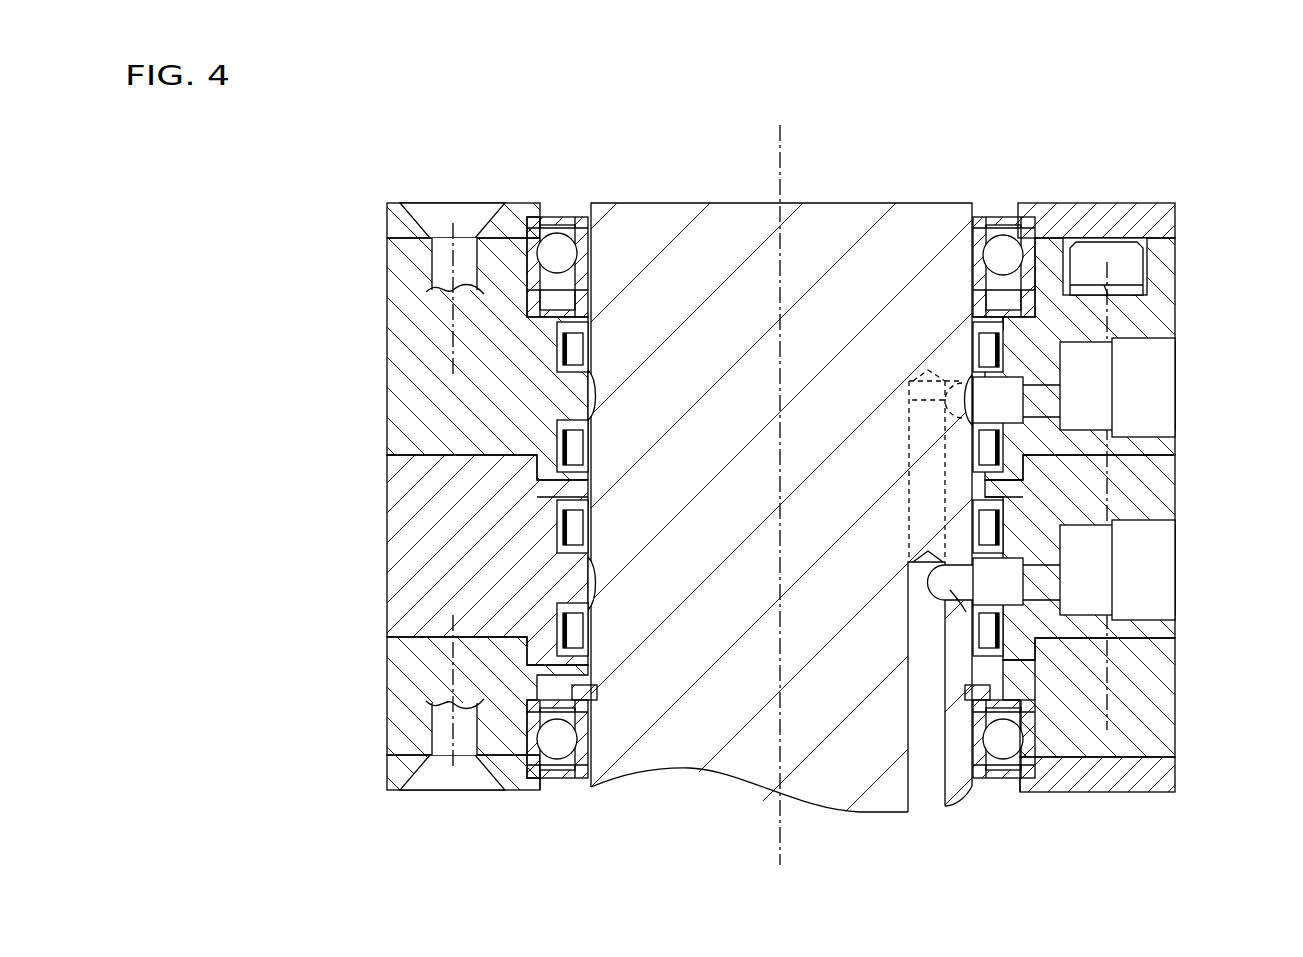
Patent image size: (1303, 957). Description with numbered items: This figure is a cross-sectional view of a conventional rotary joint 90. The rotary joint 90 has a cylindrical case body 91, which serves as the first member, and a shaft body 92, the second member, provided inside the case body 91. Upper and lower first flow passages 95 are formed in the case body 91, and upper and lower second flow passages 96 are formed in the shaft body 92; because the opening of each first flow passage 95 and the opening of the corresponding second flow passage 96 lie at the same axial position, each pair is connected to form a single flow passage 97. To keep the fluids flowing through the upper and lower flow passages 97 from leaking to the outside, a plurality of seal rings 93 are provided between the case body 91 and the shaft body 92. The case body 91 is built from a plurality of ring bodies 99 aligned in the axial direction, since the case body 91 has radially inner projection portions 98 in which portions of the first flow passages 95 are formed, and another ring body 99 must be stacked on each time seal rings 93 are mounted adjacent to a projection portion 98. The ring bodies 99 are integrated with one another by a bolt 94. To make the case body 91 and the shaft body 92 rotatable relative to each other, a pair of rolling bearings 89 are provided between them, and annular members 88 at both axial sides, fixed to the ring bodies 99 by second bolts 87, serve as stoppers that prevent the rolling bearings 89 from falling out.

The second bolt 87 is at (440, 268).
The annular member 88 is at (402, 217).
The rolling bearing 89 is at (557, 212).
The rotary joint 90 is at (1180, 490).
The case body 91 is at (1136, 201).
The shaft body 92 is at (880, 201).
The seal ring 93 is at (985, 326).
The bolt 94 is at (1120, 268).
The first flow passage 95 is at (1115, 352).
The second flow passage 96 is at (908, 404).
The single flow passage 97 is at (1064, 401).
The projection portion 98 is at (985, 370).
The ring body 99 is at (1176, 308).